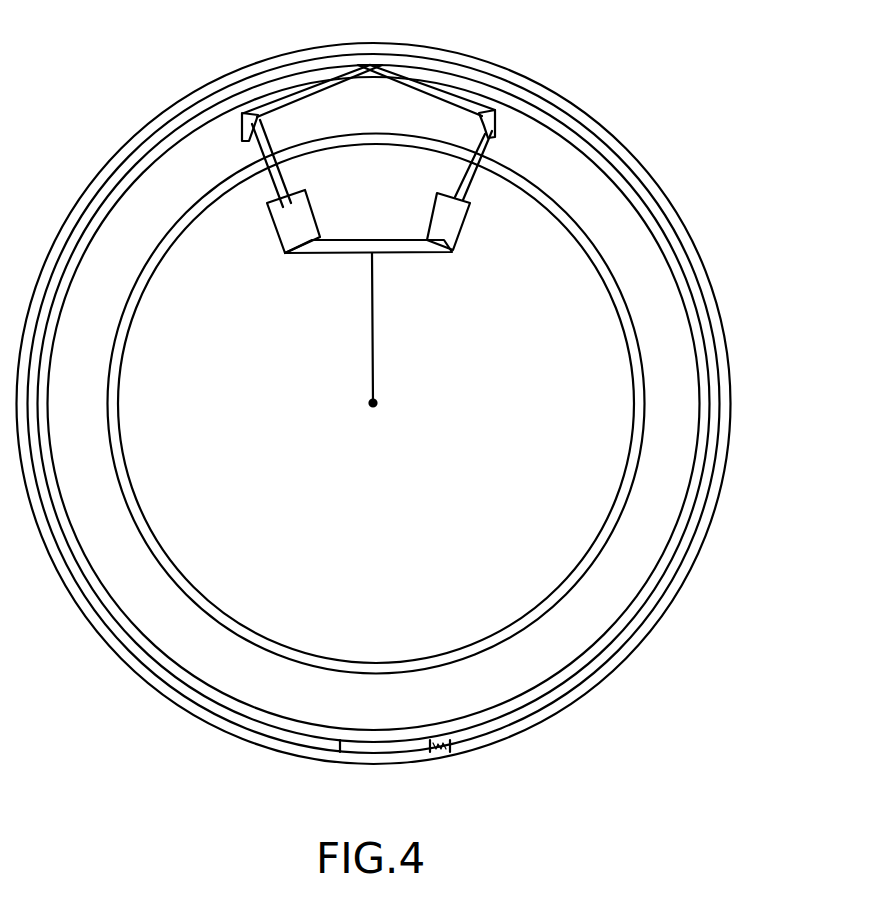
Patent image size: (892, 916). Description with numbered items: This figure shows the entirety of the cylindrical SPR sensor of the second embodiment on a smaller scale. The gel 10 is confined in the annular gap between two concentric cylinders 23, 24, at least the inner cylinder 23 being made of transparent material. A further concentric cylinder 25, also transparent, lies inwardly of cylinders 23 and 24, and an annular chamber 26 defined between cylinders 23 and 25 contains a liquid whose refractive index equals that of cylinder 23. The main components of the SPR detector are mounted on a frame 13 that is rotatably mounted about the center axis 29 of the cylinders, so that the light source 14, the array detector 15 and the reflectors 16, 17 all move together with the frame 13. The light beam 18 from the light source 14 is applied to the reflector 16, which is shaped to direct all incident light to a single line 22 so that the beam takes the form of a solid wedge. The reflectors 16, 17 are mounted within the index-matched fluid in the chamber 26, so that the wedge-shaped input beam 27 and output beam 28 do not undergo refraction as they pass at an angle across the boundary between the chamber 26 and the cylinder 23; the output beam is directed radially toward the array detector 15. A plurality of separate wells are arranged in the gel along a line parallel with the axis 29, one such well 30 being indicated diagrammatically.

The gel 10 is at (712, 366).
The frame 13 is at (449, 258).
The light source 14 is at (447, 222).
The array detector 15 is at (288, 224).
The reflector 16 is at (495, 124).
The reflector 17 is at (243, 127).
The light beam 18 is at (467, 173).
The line 22 is at (370, 70).
The inner cylinder 23 is at (692, 311).
The outer cylinder 24 is at (693, 253).
The further concentric cylinder 25 is at (636, 425).
The annular chamber 26 is at (657, 474).
The input beam 27 is at (447, 80).
The output beam 28 is at (306, 78).
The center axis 29 is at (370, 404).
The well 30 is at (446, 752).